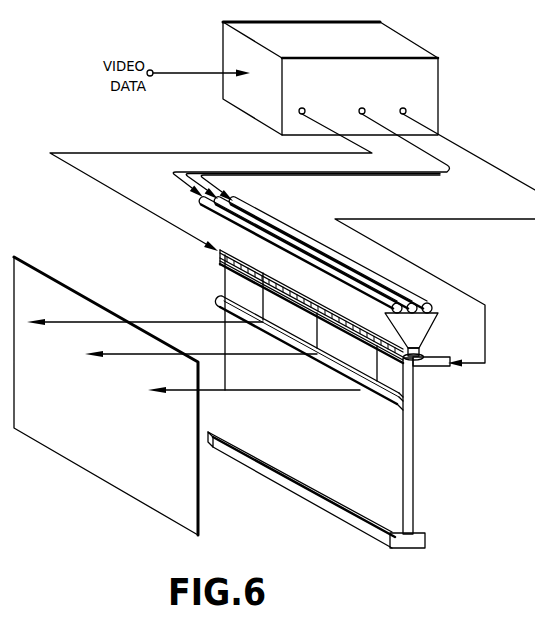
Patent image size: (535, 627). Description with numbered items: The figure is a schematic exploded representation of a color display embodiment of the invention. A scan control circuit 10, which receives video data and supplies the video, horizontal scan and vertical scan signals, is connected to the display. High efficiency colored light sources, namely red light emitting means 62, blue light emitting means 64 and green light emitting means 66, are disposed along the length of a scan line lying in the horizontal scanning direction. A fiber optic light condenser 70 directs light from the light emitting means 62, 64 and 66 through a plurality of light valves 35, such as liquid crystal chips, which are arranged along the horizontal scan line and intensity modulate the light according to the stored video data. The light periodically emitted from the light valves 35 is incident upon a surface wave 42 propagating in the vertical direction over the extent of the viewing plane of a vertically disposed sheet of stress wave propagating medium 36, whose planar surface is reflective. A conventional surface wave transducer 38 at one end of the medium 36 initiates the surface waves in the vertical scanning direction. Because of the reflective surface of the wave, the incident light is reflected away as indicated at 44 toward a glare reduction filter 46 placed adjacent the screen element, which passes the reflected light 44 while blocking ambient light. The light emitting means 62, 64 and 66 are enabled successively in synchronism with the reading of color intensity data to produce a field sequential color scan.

The scan control circuit 10 is at (417, 44).
The light valves 35 is at (263, 282).
The stress wave propagating medium 36 is at (414, 463).
The surface wave transducer 38 is at (447, 368).
The surface wave 42 is at (387, 403).
The reflected light 44 is at (292, 391).
The glare reduction filter 46 is at (143, 503).
The red light emitting means 62 is at (338, 270).
The blue light emitting means 64 is at (290, 232).
The green light emitting means 66 is at (271, 189).
The fiber optic light condenser 70 is at (433, 333).